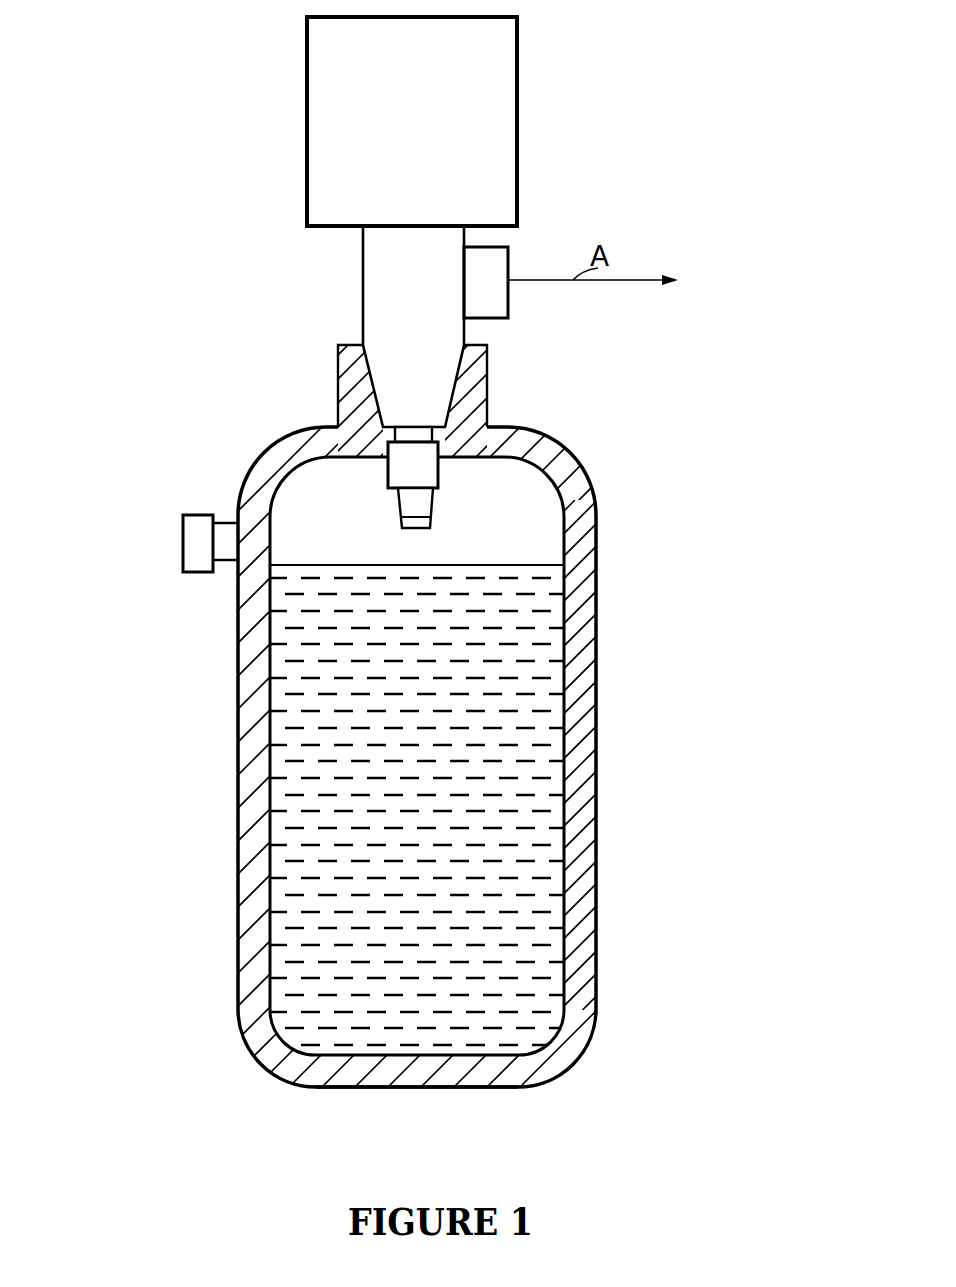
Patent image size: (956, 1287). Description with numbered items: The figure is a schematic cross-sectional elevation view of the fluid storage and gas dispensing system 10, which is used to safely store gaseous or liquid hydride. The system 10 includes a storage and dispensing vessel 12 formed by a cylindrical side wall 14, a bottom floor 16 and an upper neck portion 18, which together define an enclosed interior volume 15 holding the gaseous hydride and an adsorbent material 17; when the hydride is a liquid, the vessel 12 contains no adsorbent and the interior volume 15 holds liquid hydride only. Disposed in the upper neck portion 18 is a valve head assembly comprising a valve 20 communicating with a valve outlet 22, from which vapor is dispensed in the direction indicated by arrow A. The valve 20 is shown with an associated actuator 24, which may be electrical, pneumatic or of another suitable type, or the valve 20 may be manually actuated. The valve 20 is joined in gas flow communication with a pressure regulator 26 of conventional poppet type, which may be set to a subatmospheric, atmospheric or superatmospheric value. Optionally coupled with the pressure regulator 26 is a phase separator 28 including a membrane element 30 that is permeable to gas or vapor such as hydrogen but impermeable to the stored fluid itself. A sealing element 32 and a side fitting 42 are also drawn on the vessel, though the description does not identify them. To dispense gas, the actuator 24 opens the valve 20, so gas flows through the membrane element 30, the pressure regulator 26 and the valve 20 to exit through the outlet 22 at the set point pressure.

The fluid storage and gas dispensing system 10 is at (140, 642).
The storage and dispensing vessel 12 is at (597, 607).
The cylindrical side wall 14 is at (577, 728).
The enclosed interior volume 15 is at (540, 527).
The bottom floor 16 is at (450, 1089).
The adsorbent material 17 is at (498, 867).
The upper neck portion 18 is at (492, 380).
The valve 20 is at (382, 247).
The valve outlet 22 is at (495, 293).
The actuator 24 is at (517, 68).
The pressure regulator 26 is at (413, 467).
The phase separator 28 is at (432, 518).
The membrane element 30 is at (413, 507).
The seal 32 is at (350, 337).
The sensor fitting 42 is at (195, 555).